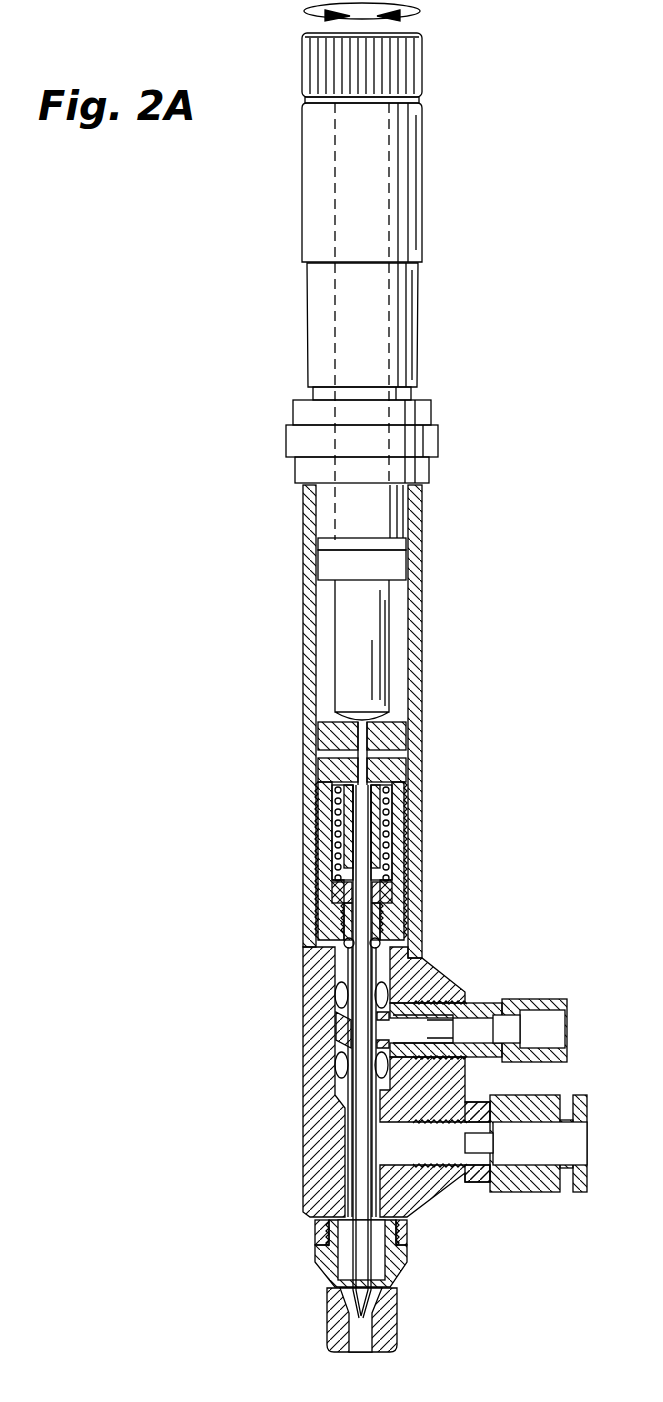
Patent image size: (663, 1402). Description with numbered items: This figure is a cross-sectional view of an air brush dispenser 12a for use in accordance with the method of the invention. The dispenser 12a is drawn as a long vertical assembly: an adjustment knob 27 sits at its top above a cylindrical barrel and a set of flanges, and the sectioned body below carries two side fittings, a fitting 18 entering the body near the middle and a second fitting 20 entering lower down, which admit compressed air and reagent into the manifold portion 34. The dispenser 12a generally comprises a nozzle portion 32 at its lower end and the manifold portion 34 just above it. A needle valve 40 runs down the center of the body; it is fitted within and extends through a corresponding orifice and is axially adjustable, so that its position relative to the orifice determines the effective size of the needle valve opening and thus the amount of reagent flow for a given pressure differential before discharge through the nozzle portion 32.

The adjustment knob 27 is at (422, 58).
The air brush dispenser 12a is at (512, 455).
The fluid inlet fitting 18 is at (540, 1000).
The air inlet fitting 20 is at (535, 1190).
The needle valve 40 is at (360, 1038).
The manifold portion 34 is at (400, 1257).
The nozzle portion 32 is at (390, 1323).